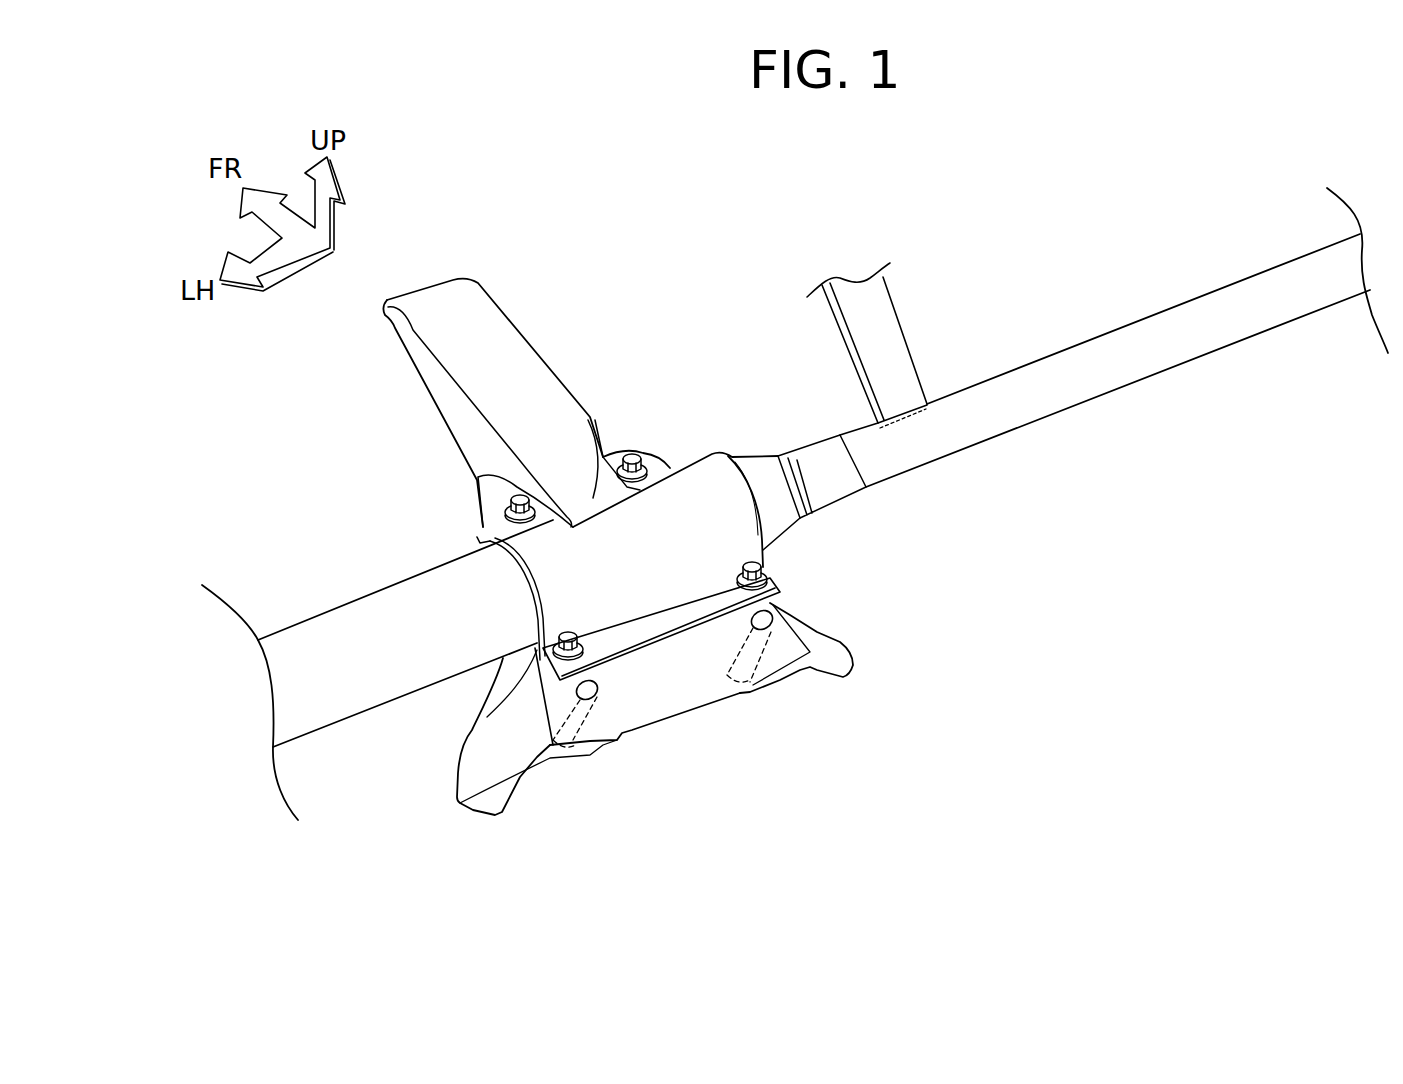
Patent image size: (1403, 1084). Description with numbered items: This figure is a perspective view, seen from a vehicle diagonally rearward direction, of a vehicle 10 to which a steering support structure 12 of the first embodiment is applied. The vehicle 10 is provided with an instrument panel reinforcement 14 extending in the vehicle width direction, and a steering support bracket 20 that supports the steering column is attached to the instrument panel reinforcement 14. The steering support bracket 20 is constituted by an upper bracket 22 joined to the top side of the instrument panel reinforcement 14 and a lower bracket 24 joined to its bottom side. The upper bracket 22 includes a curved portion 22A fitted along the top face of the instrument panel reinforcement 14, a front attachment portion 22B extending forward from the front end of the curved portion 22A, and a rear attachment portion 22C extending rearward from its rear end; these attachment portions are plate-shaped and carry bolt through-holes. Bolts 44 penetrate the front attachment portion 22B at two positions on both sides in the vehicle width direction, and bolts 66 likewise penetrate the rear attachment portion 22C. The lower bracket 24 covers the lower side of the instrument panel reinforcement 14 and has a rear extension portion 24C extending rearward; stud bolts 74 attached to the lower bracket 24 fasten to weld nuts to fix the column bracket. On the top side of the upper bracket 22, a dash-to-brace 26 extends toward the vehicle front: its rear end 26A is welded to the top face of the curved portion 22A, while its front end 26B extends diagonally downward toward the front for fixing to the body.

The vehicle 10 is at (871, 646).
The steering support structure 12 is at (845, 601).
The instrument panel reinforcement 14 is at (305, 616).
The steering support bracket 20 is at (609, 582).
The upper bracket 22 is at (582, 582).
The curved portion 22A is at (715, 520).
The front attachment portion 22B is at (493, 530).
The rear attachment portion 22C is at (647, 625).
The lower bracket 24 is at (655, 709).
The rear extension portion 24C is at (688, 690).
The dash-to-brace 26 is at (526, 372).
The rear end 26A is at (592, 497).
The front end 26B is at (443, 297).
The bolt 44 is at (628, 456).
The bolt 66 is at (757, 566).
The stud bolt 74 is at (588, 730).